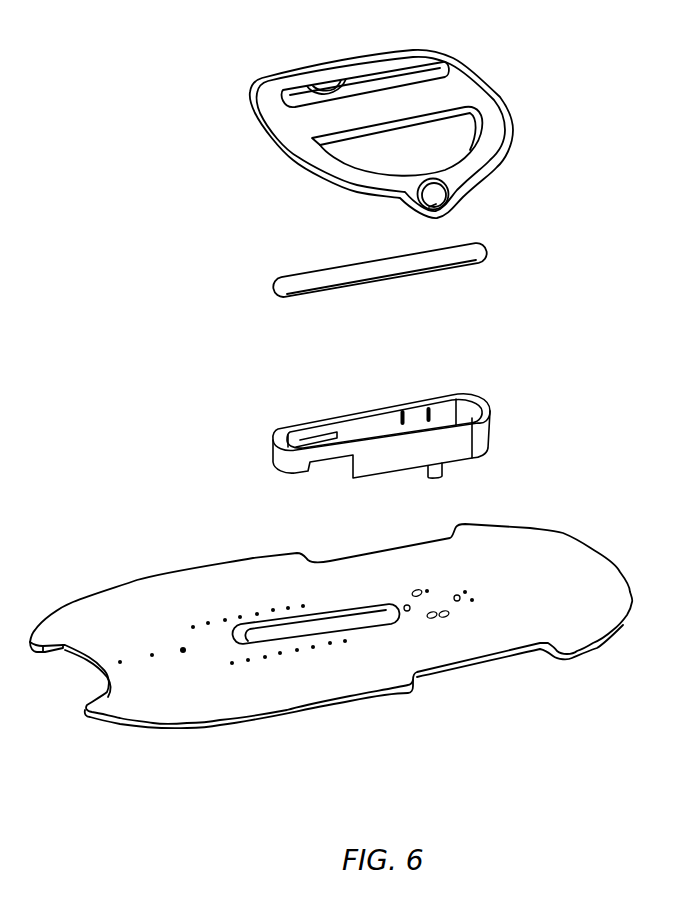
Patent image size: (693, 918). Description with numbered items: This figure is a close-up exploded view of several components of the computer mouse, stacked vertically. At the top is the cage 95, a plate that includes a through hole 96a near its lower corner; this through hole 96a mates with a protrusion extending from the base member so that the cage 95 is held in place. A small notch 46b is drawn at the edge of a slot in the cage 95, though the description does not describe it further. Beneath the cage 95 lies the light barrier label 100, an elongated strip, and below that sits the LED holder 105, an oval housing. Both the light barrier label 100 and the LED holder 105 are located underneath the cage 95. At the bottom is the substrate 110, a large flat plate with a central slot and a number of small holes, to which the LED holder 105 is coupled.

The cage 95 is at (490, 85).
The notch 46b is at (330, 78).
The through hole 96a is at (453, 201).
The light barrier label 100 is at (487, 252).
The LED holder 105 is at (500, 420).
The substrate 110 is at (627, 565).